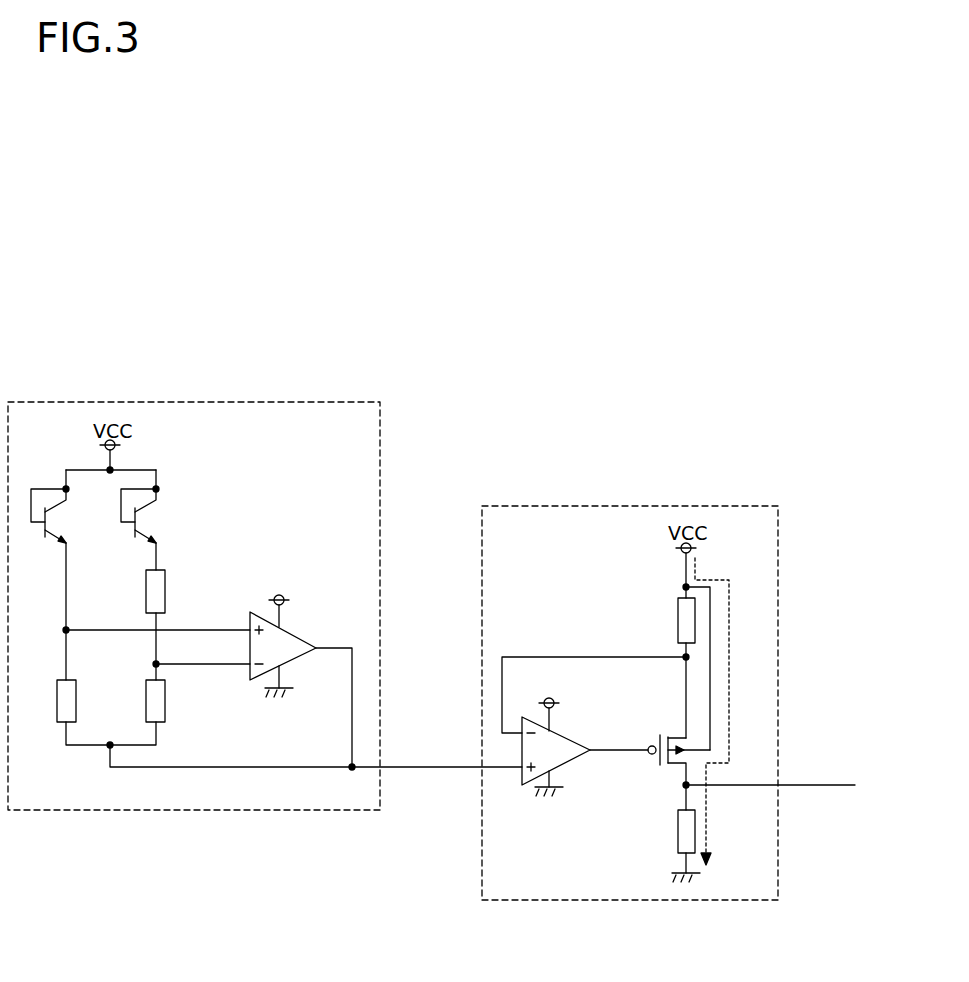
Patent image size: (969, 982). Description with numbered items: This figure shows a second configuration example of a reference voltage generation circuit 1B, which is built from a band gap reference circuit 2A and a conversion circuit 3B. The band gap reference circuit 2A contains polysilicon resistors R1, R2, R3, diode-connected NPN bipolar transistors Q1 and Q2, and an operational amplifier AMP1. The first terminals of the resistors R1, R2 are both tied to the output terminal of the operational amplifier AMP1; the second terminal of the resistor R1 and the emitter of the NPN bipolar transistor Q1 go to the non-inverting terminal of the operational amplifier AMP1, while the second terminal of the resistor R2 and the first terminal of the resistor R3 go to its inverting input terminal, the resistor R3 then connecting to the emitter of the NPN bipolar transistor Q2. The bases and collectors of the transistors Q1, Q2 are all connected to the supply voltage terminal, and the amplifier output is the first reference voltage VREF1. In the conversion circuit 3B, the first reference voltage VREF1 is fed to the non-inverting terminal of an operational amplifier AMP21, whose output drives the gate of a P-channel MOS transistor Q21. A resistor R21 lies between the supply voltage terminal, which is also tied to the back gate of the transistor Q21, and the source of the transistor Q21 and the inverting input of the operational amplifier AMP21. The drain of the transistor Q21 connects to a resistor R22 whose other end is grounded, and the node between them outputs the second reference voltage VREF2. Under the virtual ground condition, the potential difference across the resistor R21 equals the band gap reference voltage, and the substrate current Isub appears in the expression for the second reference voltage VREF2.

The reference voltage generation circuit 1B is at (438, 323).
The band gap reference circuit 2A is at (191, 402).
The conversion circuit 3B is at (632, 506).
The NPN bipolar transistor Q1 is at (72, 514).
The NPN bipolar transistor Q2 is at (162, 514).
The resistor R1 is at (89, 701).
The resistor R2 is at (178, 701).
The resistor R3 is at (178, 591).
The operational amplifier AMP1 is at (300, 636).
The first reference voltage VREF1 is at (422, 755).
The operational amplifier AMP21 is at (577, 745).
The P-channel MOS transistor Q21 is at (656, 760).
The resistor R21 is at (677, 622).
The resistor R22 is at (677, 832).
The substrate current Isub is at (734, 711).
The second reference voltage VREF2 is at (771, 773).